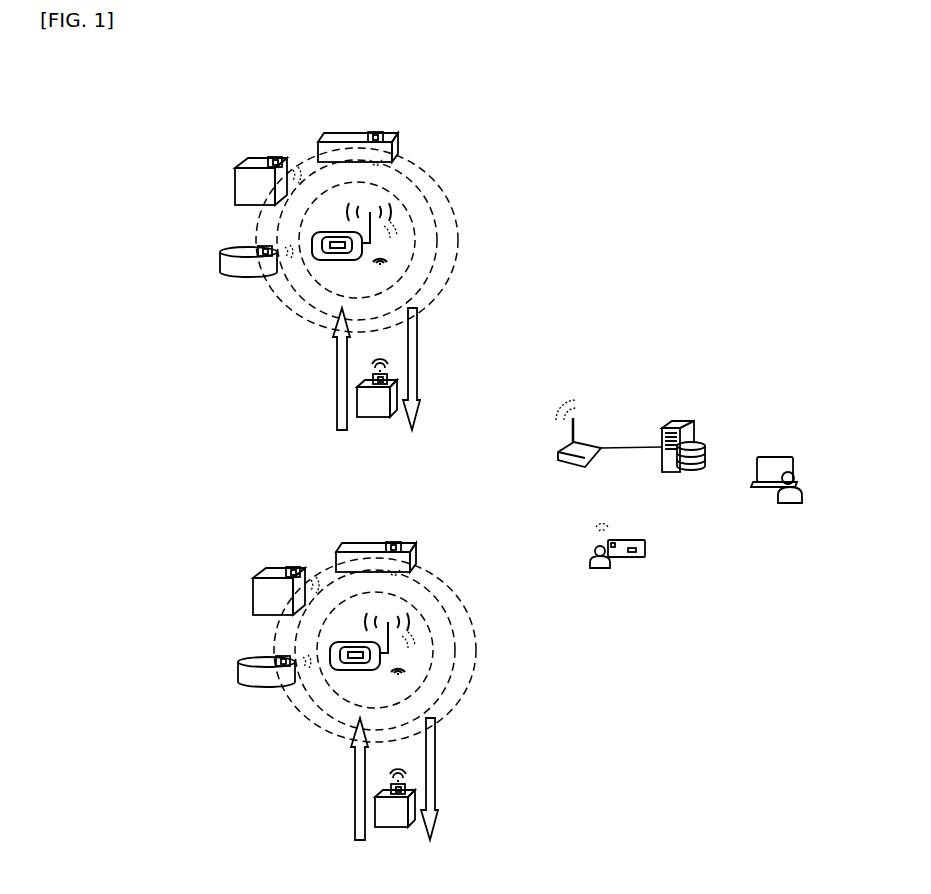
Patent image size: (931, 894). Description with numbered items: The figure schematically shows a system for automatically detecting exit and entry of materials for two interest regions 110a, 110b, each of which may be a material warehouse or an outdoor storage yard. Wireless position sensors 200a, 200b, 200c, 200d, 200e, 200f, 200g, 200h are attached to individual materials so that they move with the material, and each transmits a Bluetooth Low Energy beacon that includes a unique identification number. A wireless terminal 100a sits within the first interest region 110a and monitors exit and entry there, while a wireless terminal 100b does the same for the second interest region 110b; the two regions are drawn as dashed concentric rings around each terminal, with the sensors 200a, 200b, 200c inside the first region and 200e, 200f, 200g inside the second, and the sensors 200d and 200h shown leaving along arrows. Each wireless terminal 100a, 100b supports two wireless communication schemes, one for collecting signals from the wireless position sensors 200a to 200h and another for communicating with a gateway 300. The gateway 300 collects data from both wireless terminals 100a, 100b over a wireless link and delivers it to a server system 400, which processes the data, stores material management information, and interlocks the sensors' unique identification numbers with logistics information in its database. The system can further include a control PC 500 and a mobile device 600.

The wireless terminal 100a is at (337, 261).
The wireless terminal 100b is at (335, 683).
The interest region 110a is at (462, 236).
The interest region 110b is at (417, 650).
The wireless position sensor 200a is at (376, 132).
The wireless position sensor 200b is at (273, 157).
The wireless position sensor 200c is at (258, 250).
The wireless position sensor 200d is at (388, 374).
The wireless position sensor 200e is at (395, 529).
The wireless position sensor 200f is at (272, 555).
The wireless position sensor 200g is at (236, 658).
The wireless position sensor 200h is at (453, 791).
The gateway 300 is at (593, 441).
The server system 400 is at (673, 421).
The control PC 500 is at (777, 457).
The mobile device 600 is at (625, 557).